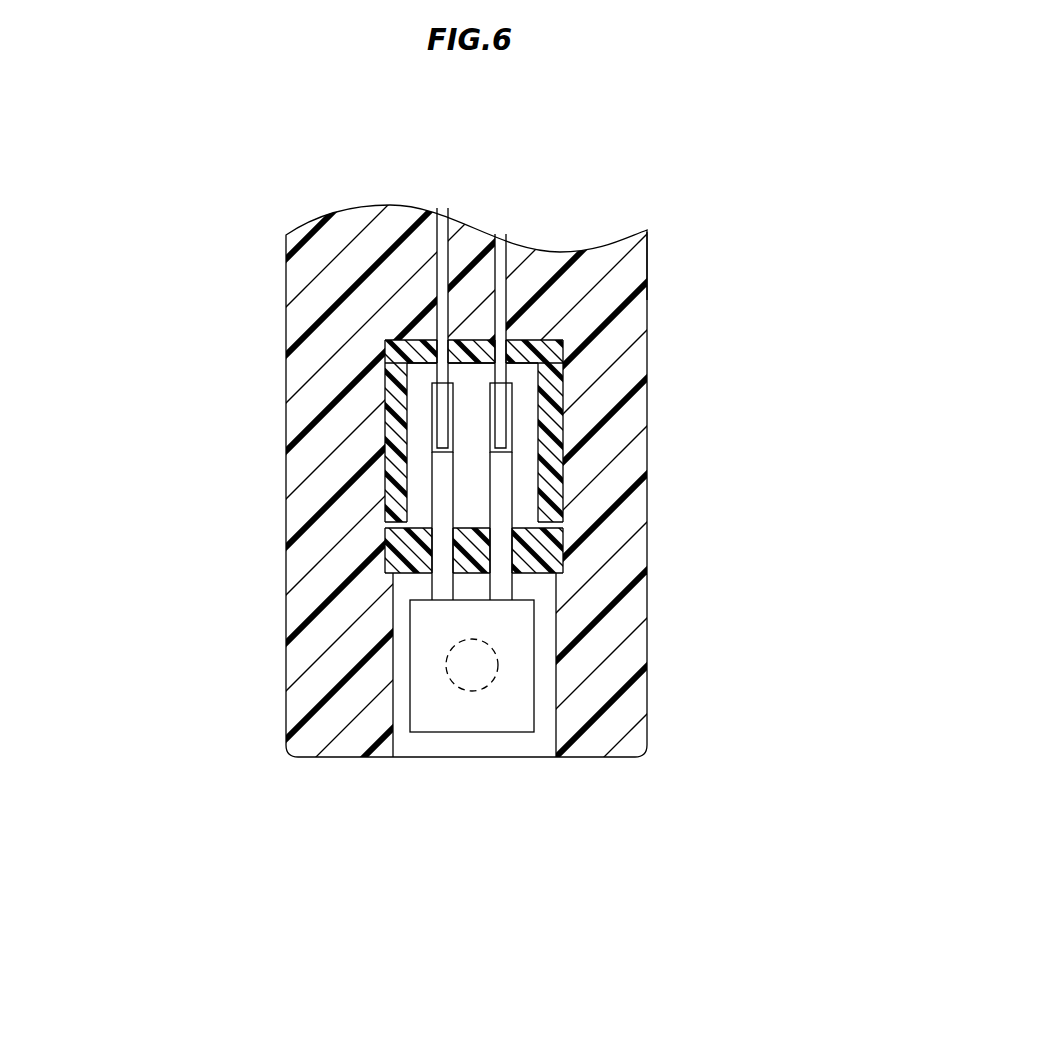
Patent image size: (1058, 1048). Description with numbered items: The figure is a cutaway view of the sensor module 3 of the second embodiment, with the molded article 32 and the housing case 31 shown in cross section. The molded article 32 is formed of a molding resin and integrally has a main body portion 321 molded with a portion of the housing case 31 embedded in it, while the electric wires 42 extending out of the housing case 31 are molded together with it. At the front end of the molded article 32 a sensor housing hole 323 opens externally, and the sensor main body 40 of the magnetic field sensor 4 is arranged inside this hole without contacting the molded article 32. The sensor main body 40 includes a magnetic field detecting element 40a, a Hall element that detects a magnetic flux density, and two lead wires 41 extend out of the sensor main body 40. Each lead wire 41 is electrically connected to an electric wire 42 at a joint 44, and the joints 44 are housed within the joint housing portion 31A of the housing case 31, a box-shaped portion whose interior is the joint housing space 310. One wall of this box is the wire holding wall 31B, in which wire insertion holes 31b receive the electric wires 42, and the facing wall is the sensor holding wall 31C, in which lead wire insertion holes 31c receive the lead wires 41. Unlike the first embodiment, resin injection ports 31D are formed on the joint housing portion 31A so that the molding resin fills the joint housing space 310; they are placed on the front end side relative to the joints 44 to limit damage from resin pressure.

The sensor module 3 is at (300, 212).
The molded article 32 is at (637, 248).
The main body portion 321 is at (640, 272).
The sensor housing hole 323 is at (541, 753).
The housing case 31 is at (563, 340).
The joint housing portion 31A is at (548, 374).
The wire holding wall 31B is at (462, 358).
The sensor holding wall 31C is at (430, 549).
The resin injection port 31D is at (384, 521).
The wire insertion hole 31b is at (442, 352).
The lead wire insertion hole 31c is at (432, 548).
The joint housing space 310 is at (530, 410).
The electric wire 42 is at (498, 234).
The joint 44 is at (462, 418).
The magnetic field sensor 4 is at (673, 676).
The lead wire 41 is at (505, 550).
The sensor main body 40 is at (523, 615).
The magnetic field detecting element 40a is at (488, 667).